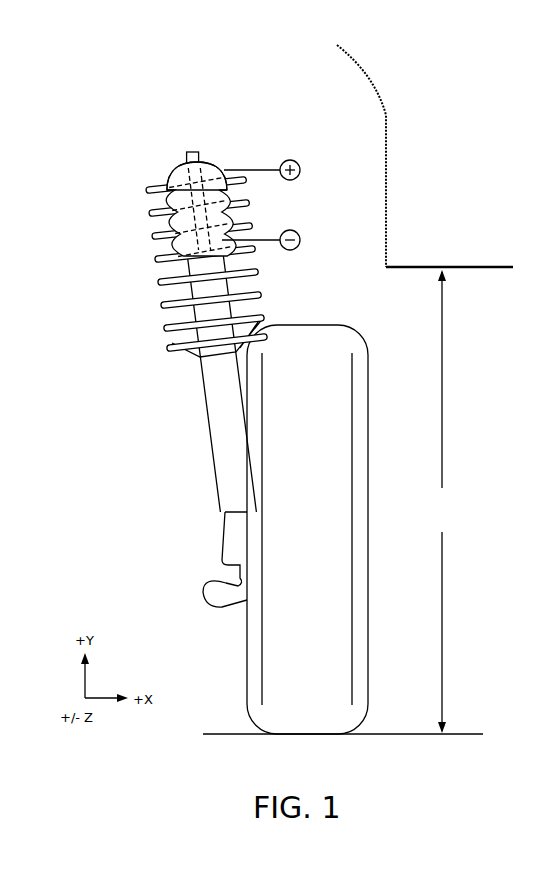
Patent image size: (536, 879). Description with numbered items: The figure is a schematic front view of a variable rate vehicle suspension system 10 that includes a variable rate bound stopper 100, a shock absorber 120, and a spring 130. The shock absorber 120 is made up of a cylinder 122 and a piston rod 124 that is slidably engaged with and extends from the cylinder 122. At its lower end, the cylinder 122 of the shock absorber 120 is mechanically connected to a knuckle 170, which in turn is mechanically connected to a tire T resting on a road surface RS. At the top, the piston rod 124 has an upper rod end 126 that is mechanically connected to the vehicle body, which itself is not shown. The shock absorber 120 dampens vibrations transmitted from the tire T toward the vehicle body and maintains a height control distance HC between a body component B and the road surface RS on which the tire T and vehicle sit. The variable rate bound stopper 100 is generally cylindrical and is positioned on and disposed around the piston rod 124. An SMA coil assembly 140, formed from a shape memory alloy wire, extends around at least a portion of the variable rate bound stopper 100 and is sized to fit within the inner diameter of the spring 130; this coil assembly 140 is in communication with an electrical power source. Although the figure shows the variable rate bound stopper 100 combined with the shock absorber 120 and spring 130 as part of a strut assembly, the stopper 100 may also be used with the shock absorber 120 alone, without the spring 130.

The variable rate vehicle suspension system 10 is at (192, 341).
The variable rate bound stopper 100 is at (224, 294).
The shock absorber 120 is at (194, 294).
The cylinder 122 is at (228, 472).
The piston rod 124 is at (198, 183).
The upper rod end 126 is at (190, 156).
The spring 130 is at (262, 295).
The SMA coil assembly 140 is at (176, 181).
The knuckle 170 is at (223, 534).
The tire T is at (368, 532).
The body component B is at (470, 265).
The height control distance HC is at (442, 501).
The road surface RS is at (423, 737).